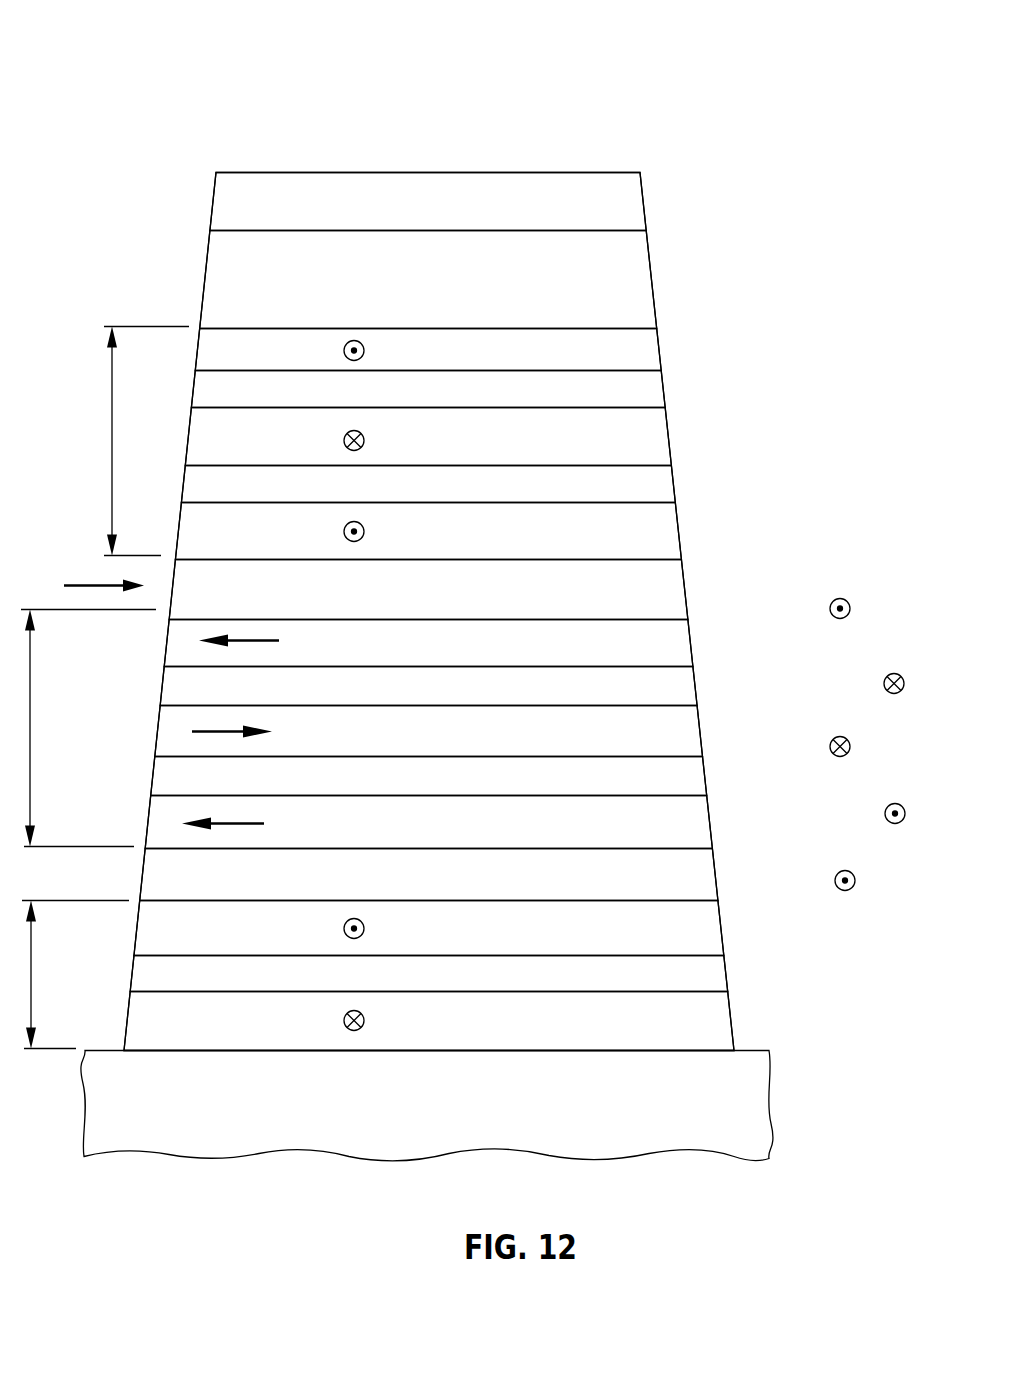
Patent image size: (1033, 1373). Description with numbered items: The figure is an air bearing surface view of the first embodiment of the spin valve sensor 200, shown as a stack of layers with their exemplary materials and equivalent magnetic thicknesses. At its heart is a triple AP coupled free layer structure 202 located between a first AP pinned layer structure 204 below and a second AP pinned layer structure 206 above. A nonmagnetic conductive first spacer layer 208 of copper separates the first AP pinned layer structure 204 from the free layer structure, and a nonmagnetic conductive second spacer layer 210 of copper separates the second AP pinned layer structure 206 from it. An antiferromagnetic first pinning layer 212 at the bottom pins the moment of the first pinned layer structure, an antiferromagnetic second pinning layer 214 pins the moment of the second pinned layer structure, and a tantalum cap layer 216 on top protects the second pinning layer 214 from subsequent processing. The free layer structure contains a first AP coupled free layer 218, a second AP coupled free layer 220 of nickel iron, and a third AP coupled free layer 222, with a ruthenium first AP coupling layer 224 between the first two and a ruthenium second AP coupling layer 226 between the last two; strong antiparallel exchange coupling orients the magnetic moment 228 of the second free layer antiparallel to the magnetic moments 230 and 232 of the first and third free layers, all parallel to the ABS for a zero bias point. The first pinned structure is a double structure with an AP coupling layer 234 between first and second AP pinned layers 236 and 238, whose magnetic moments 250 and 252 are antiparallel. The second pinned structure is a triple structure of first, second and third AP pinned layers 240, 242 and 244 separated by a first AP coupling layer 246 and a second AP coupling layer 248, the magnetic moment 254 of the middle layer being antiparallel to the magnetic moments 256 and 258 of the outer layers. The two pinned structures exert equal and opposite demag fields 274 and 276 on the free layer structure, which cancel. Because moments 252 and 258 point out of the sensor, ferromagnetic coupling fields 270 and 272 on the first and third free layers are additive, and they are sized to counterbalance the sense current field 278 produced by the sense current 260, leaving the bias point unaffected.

The spin valve sensor 200 is at (640, 128).
The triple AP coupled free layer structure 202 is at (31, 611).
The first AP pinned layer structure 204 is at (32, 1050).
The second AP pinned layer structure 206 is at (113, 328).
The first spacer layer 208 is at (718, 874).
The second spacer layer 210 is at (683, 579).
The first pinning layer 212 is at (700, 1150).
The second pinning layer 214 is at (653, 298).
The cap layer 216 is at (643, 203).
The first AP coupled free layer 218 is at (712, 834).
The second AP coupled free layer 220 is at (703, 734).
The third AP coupled free layer 222 is at (690, 638).
The first AP coupling layer 224 is at (708, 787).
The second AP coupling layer 226 is at (697, 696).
The magnetic moment of second AP coupled free layer 228 is at (220, 732).
The magnetic moment of first AP coupled free layer 230 is at (230, 826).
The magnetic moment of third AP coupled free layer 232 is at (252, 641).
The AP coupling layer 234 is at (730, 973).
The first AP pinned layer 236 is at (735, 1026).
The second AP pinned layer 238 is at (722, 926).
The first AP pinned layer 240 is at (659, 353).
The second AP pinned layer 242 is at (668, 439).
The third AP pinned layer 244 is at (678, 531).
The first AP coupling layer 246 is at (663, 388).
The second AP coupling layer 248 is at (675, 492).
The magnetic moment of first AP pinned layer 250 is at (351, 1011).
The magnetic moment of second AP pinned layer 252 is at (355, 919).
The magnetic moment of second AP pinned layer 254 is at (351, 431).
The magnetic moment of first AP pinned layer 256 is at (350, 341).
The magnetic moment of third AP pinned layer 258 is at (351, 522).
The sense current 260 is at (90, 590).
The ferromagnetic coupling field 270 is at (848, 871).
The ferromagnetic coupling field 272 is at (841, 599).
The demag field 274 is at (897, 804).
The demag field 276 is at (897, 674).
The sense current field 278 is at (842, 737).